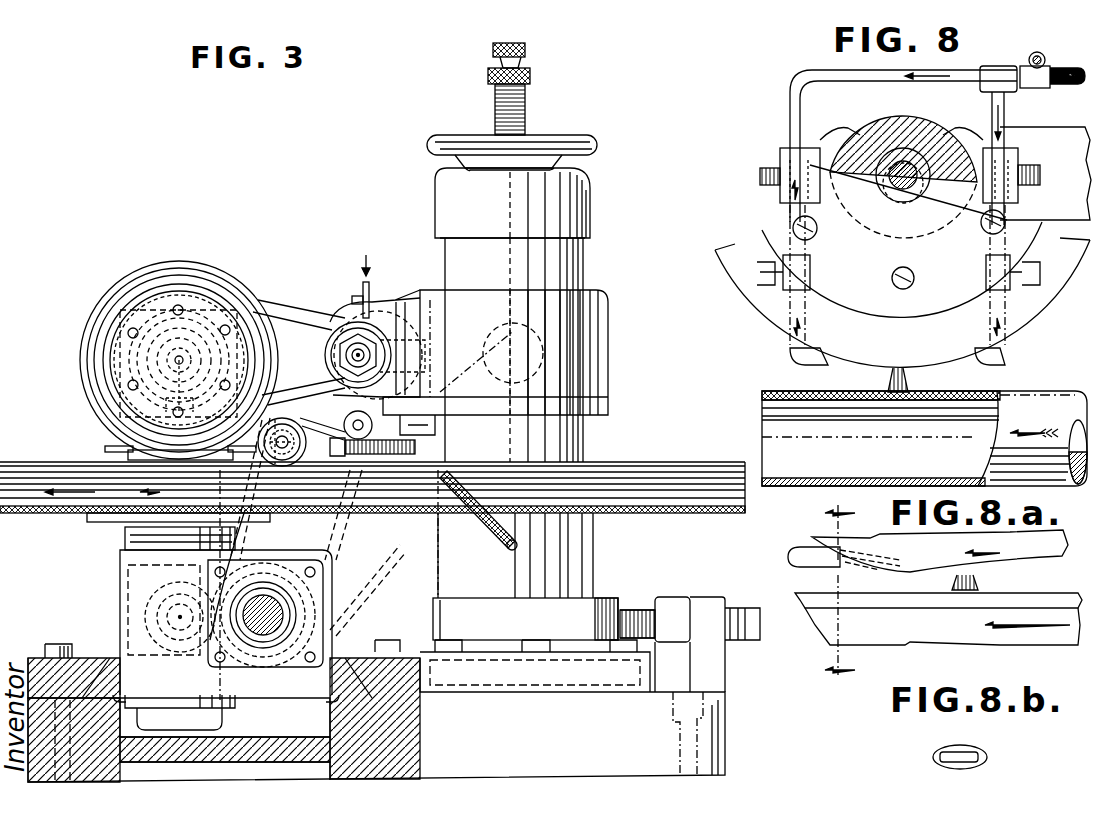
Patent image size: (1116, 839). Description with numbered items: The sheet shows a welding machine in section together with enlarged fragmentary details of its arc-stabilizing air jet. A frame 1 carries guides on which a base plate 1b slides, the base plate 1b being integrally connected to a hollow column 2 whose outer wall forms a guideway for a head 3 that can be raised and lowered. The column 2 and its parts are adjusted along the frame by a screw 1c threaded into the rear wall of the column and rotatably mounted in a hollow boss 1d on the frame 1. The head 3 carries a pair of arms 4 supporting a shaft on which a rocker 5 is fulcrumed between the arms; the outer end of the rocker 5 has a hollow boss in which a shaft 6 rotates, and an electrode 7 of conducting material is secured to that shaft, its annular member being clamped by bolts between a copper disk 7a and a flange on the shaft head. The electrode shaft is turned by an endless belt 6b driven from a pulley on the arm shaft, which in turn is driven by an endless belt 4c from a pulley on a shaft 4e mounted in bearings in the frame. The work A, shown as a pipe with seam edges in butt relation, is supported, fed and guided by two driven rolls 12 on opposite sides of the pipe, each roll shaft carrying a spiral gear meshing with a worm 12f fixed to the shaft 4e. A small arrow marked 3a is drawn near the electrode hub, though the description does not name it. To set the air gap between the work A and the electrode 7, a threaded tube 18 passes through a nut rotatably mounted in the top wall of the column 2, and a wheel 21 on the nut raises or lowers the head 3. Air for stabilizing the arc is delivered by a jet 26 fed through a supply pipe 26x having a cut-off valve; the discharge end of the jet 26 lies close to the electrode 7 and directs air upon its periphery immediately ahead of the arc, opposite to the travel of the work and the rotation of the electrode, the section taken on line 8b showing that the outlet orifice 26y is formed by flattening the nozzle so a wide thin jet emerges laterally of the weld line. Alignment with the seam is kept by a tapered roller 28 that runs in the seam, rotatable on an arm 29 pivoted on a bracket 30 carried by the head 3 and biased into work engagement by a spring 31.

In FIG. 3, the frame 1 is at (712, 738).
In FIG. 3, the base plate 1b is at (568, 694).
In FIG. 3, the screw 1c is at (630, 614).
In FIG. 3, the hollow boss 1d is at (705, 604).
In FIG. 3, the hollow column 2 is at (448, 264).
In FIG. 3, the head 3 is at (590, 382).
In FIG. 3, the slide arrow 3a is at (165, 497).
In FIG. 3, the arms 4 is at (408, 305).
In FIG. 3, the endless belt or chain 4c is at (358, 598).
In FIG. 3, the shaft 4e is at (262, 635).
In FIG. 8, the rocker 5 is at (1052, 135).
In FIG. 8, the shaft 6 is at (872, 118).
In FIG. 3, the endless belt 6b is at (307, 412).
In FIG. 3, the electrode 7 is at (163, 270).
In FIG. 8, the electrode 7 is at (1048, 270).
In FIG. 8a, the electrode 7 is at (1045, 570).
In FIG. 3, the copper disk 7a is at (118, 342).
In FIG. 3, the driven rolls 12 is at (100, 522).
In FIG. 3, the worm 12f is at (480, 540).
In FIG. 3, the tube 18 is at (524, 104).
In FIG. 3, the wheel 21 is at (588, 142).
In FIG. 8, the jet 26 is at (815, 352).
In FIG. 8a, the jet 26 is at (792, 568).
In FIG. 8b, the jet 26 is at (937, 752).
In FIG. 3, the supply pipe 26x is at (322, 305).
In FIG. 8, the supply pipe 26x is at (812, 78).
In FIG. 8b, the outlet orifice 26y is at (952, 768).
In FIG. 3, the roller 28 is at (303, 480).
In FIG. 3, the arm 29 is at (294, 442).
In FIG. 3, the bracket 30 is at (433, 426).
In FIG. 3, the spring 31 is at (335, 470).
In FIG. 8a, the section line 8b is at (841, 591).
In FIG. 8, the work A is at (790, 492).
In FIG. 8a, the work A is at (938, 619).